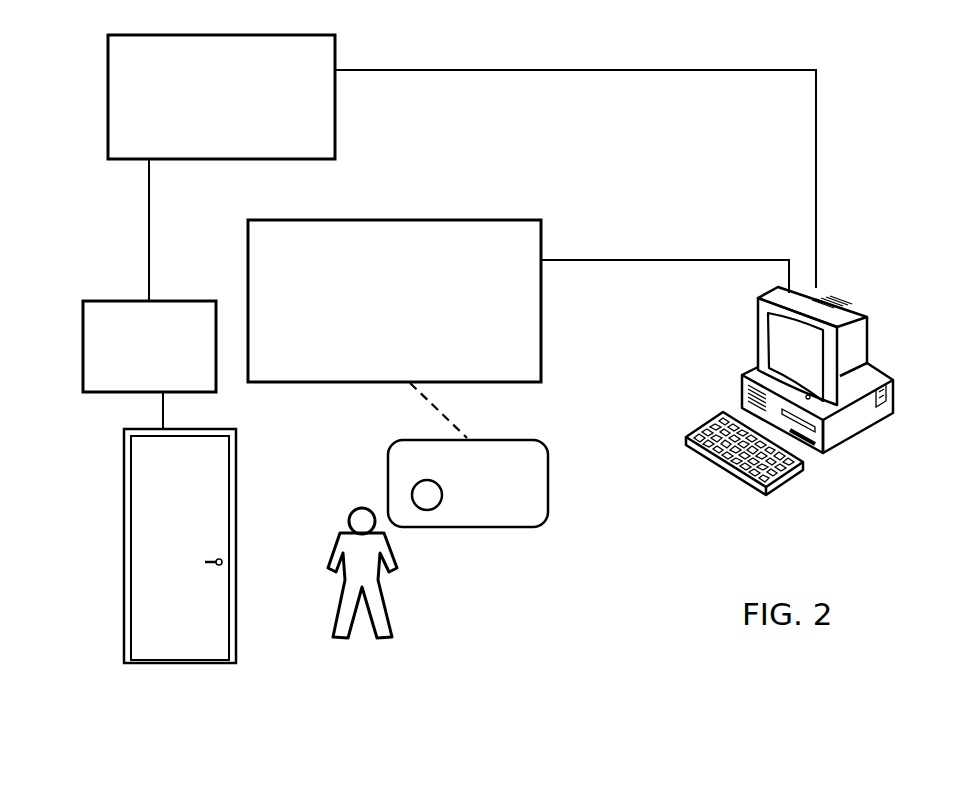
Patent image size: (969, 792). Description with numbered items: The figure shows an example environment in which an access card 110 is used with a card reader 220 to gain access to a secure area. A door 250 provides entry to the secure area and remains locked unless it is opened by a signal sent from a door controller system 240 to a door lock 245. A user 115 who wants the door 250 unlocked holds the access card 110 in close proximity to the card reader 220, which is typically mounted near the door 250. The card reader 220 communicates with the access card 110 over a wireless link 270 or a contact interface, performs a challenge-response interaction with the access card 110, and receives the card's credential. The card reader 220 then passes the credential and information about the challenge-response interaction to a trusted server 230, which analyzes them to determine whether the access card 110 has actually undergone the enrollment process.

The door controller system 240 is at (292, 150).
The door lock 245 is at (172, 380).
The door 250 is at (125, 527).
The card reader 220 is at (499, 370).
The wireless link 270 is at (452, 423).
The access card 110 is at (504, 508).
The user 115 is at (386, 603).
The trusted server 230 is at (828, 448).